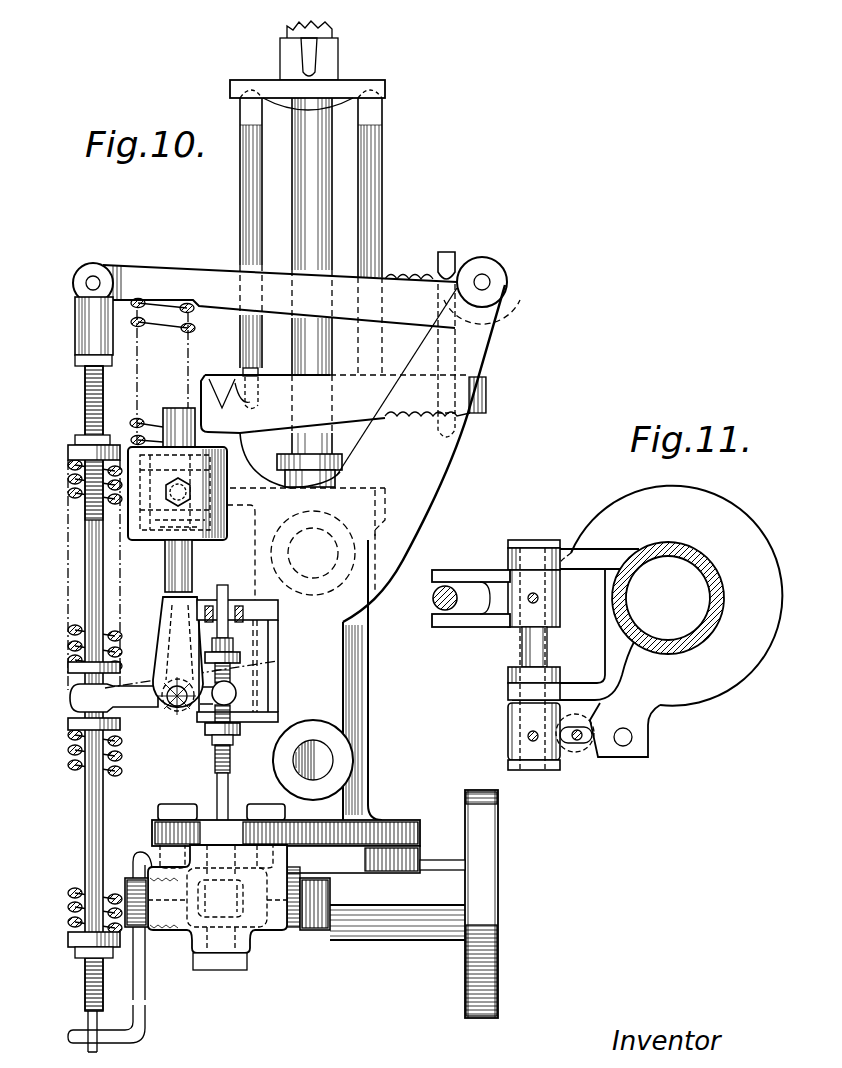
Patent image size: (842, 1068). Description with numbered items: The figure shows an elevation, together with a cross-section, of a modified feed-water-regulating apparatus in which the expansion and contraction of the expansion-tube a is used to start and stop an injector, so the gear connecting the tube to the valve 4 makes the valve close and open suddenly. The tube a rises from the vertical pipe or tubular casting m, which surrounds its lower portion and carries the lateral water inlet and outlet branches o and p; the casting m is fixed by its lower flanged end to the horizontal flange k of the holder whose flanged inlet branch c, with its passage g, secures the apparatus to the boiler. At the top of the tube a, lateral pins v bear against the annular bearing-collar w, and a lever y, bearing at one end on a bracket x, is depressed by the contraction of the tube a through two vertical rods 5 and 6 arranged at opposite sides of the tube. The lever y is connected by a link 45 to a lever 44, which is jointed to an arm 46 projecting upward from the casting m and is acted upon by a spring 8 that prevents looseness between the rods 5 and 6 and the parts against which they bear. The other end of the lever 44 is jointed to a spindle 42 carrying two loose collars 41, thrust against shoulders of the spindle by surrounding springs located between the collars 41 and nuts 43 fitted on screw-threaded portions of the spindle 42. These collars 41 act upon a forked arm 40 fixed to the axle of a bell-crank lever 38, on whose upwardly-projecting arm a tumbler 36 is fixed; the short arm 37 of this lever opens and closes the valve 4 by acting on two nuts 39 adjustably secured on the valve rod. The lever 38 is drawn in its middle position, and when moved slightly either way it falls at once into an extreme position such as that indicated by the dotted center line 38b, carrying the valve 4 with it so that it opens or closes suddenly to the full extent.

In FIG. 10, the valve 4 is at (177, 944).
In FIG. 10, the vertical rod 5 is at (383, 190).
In FIG. 10, the second vertical rod 6 is at (240, 205).
In FIG. 10, the spring 8 is at (172, 326).
In FIG. 10, the tumbler 36 is at (228, 506).
In FIG. 10, the short arm 37 is at (237, 694).
In FIG. 11, the short arm 37 is at (596, 742).
In FIG. 10, the bell-crank lever 38 is at (160, 640).
In FIG. 10, the dotted center line 38b is at (206, 626).
In FIG. 10, the nuts 39 is at (236, 653).
In FIG. 10, the forked arm 40 is at (170, 708).
In FIG. 11, the forked arm 40 is at (487, 620).
In FIG. 10, the collars 41 is at (70, 674).
In FIG. 10, the spindle 42 is at (86, 569).
In FIG. 11, the spindle 42 is at (458, 598).
In FIG. 10, the nuts 43 is at (70, 448).
In FIG. 10, the lever 44 is at (296, 292).
In FIG. 10, the link 45 is at (446, 262).
In FIG. 10, the arm 46 is at (497, 341).
In FIG. 10, the expansion-tube a is at (246, 332).
In FIG. 10, the lateral pins v is at (309, 50).
In FIG. 10, the bearing-collar w is at (346, 84).
In FIG. 10, the bracket x is at (241, 440).
In FIG. 10, the lever y is at (343, 404).
In FIG. 10, the water outlet branch p is at (313, 553).
In FIG. 10, the vertical pipe or tubular casting m is at (287, 654).
In FIG. 11, the vertical pipe or tubular casting m is at (724, 609).
In FIG. 10, the water inlet branch o is at (313, 760).
In FIG. 10, the horizontal flange k is at (286, 841).
In FIG. 10, the passage g is at (373, 903).
In FIG. 10, the flanged inlet branch c is at (481, 904).